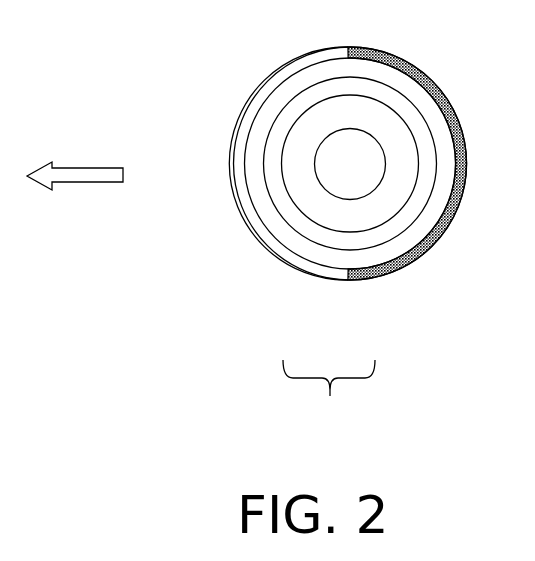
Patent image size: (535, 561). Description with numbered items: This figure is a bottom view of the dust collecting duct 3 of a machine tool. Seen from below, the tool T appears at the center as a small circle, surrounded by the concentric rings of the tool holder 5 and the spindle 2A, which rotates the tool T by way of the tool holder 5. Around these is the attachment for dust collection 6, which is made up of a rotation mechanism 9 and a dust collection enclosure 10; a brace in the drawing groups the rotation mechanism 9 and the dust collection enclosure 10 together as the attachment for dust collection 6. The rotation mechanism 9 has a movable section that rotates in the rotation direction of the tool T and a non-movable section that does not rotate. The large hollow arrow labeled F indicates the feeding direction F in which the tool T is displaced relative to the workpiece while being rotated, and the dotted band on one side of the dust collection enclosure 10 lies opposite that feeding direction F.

The spindle 2A is at (285, 101).
The dust collecting duct 3 is at (228, 127).
The tool holder 5 is at (308, 211).
The tool T is at (325, 166).
The feeding direction F is at (75, 168).
The rotation mechanism 9 is at (295, 266).
The dust collection enclosure 10 is at (367, 280).
The attachment for dust collection 6 is at (329, 394).